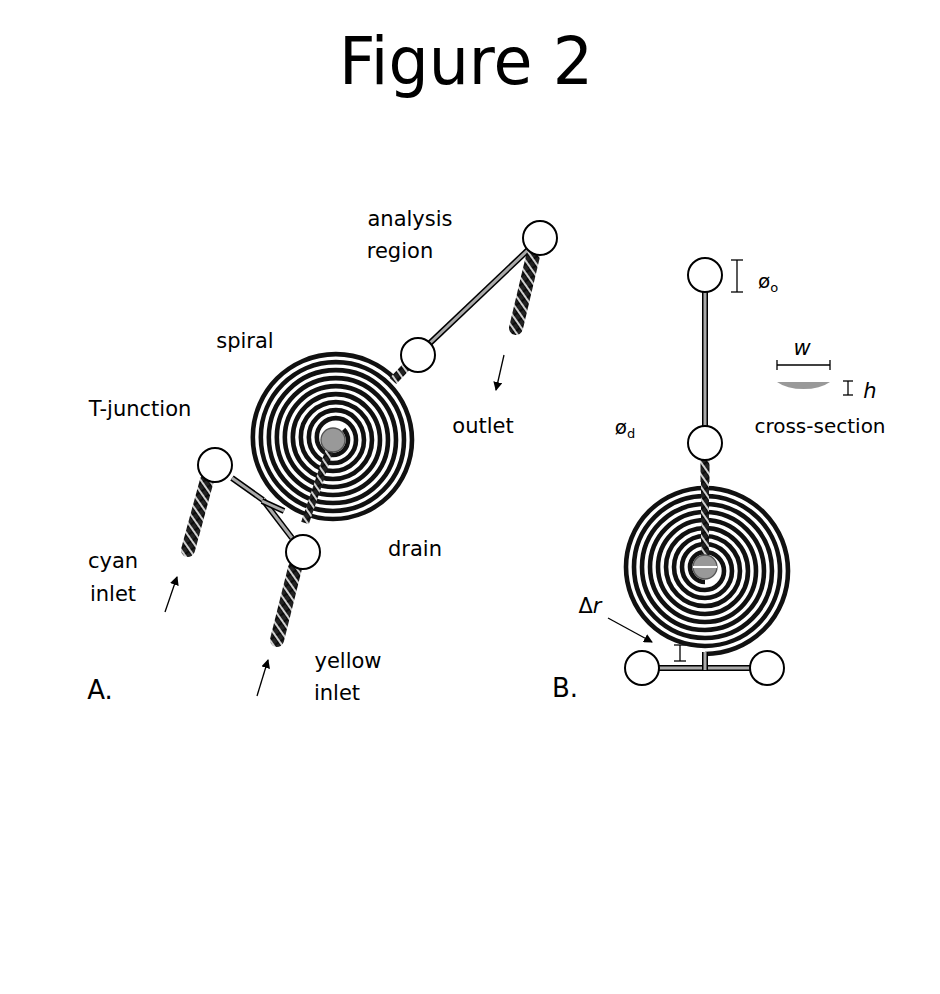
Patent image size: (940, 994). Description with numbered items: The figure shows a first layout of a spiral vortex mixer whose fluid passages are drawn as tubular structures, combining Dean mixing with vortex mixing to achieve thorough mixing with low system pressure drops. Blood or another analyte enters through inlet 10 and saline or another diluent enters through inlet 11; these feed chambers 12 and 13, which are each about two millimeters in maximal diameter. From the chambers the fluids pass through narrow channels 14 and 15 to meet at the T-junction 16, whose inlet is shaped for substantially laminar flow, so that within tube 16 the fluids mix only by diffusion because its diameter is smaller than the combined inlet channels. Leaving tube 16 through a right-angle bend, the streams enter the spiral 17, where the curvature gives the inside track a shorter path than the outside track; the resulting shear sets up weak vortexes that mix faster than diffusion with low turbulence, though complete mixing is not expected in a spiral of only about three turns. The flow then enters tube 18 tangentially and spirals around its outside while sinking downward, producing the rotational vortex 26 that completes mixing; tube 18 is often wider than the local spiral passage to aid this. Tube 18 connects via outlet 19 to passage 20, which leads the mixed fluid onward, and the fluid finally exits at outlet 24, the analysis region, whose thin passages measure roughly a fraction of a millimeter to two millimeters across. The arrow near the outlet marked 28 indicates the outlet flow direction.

The inlet 10 is at (630, 688).
The inlet 11 is at (826, 730).
The chamber 12 is at (640, 757).
The chamber 13 is at (820, 645).
The narrow channel 14 is at (223, 503).
The narrow channel 15 is at (269, 534).
The T-junction 16 is at (246, 523).
The spiral 17 is at (415, 472).
The tube 18 is at (312, 428).
The outlet 19 is at (375, 358).
The passage 20 is at (410, 350).
The outlet 24 is at (498, 273).
The rotational vortex 26 is at (532, 240).
The outlet flow 28 is at (514, 376).